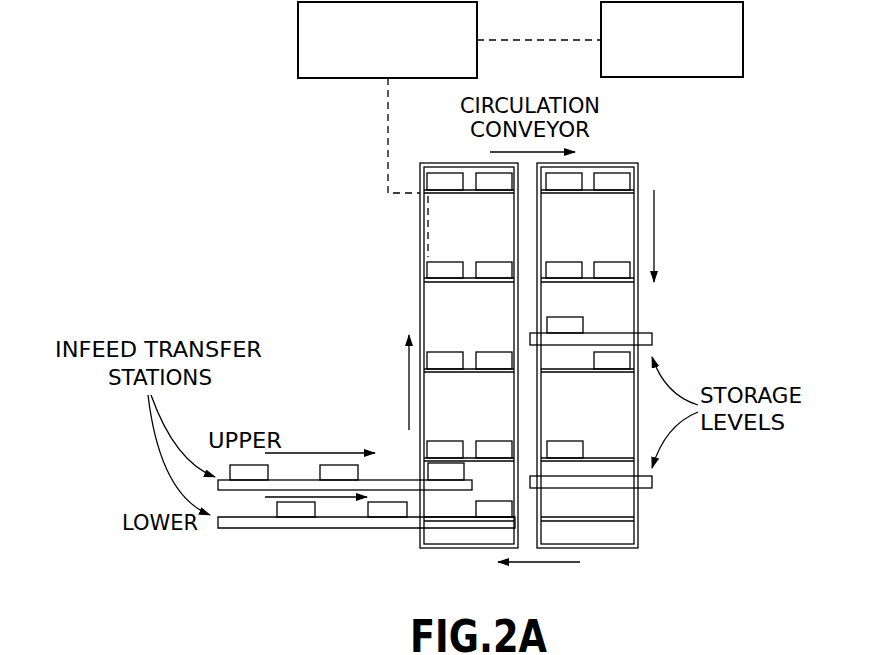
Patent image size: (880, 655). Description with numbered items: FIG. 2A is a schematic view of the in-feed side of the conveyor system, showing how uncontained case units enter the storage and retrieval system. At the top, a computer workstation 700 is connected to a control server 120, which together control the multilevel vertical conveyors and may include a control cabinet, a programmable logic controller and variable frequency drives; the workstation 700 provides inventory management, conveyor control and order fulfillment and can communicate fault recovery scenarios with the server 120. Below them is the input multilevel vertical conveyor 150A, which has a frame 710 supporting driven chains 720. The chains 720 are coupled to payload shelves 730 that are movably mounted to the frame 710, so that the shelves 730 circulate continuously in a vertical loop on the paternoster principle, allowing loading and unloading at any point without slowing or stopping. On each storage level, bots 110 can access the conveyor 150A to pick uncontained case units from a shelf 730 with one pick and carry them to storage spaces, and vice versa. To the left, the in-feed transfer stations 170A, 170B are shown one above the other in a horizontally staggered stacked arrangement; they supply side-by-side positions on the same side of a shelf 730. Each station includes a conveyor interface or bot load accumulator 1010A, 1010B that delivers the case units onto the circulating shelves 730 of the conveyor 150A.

The computer workstation 700 is at (298, 27).
The control server 120 is at (743, 22).
The frame 710 is at (638, 183).
The input multilevel vertical conveyor 150A is at (625, 163).
The bot 110 is at (652, 334).
The chain 720 is at (420, 230).
The payload shelf 730 is at (418, 272).
The in-feed transfer station 170A is at (240, 530).
The in-feed transfer station 170B is at (400, 478).
The conveyor interface/bot load accumulator 1010A is at (487, 527).
The conveyor interface/bot load accumulator 1010B is at (447, 490).